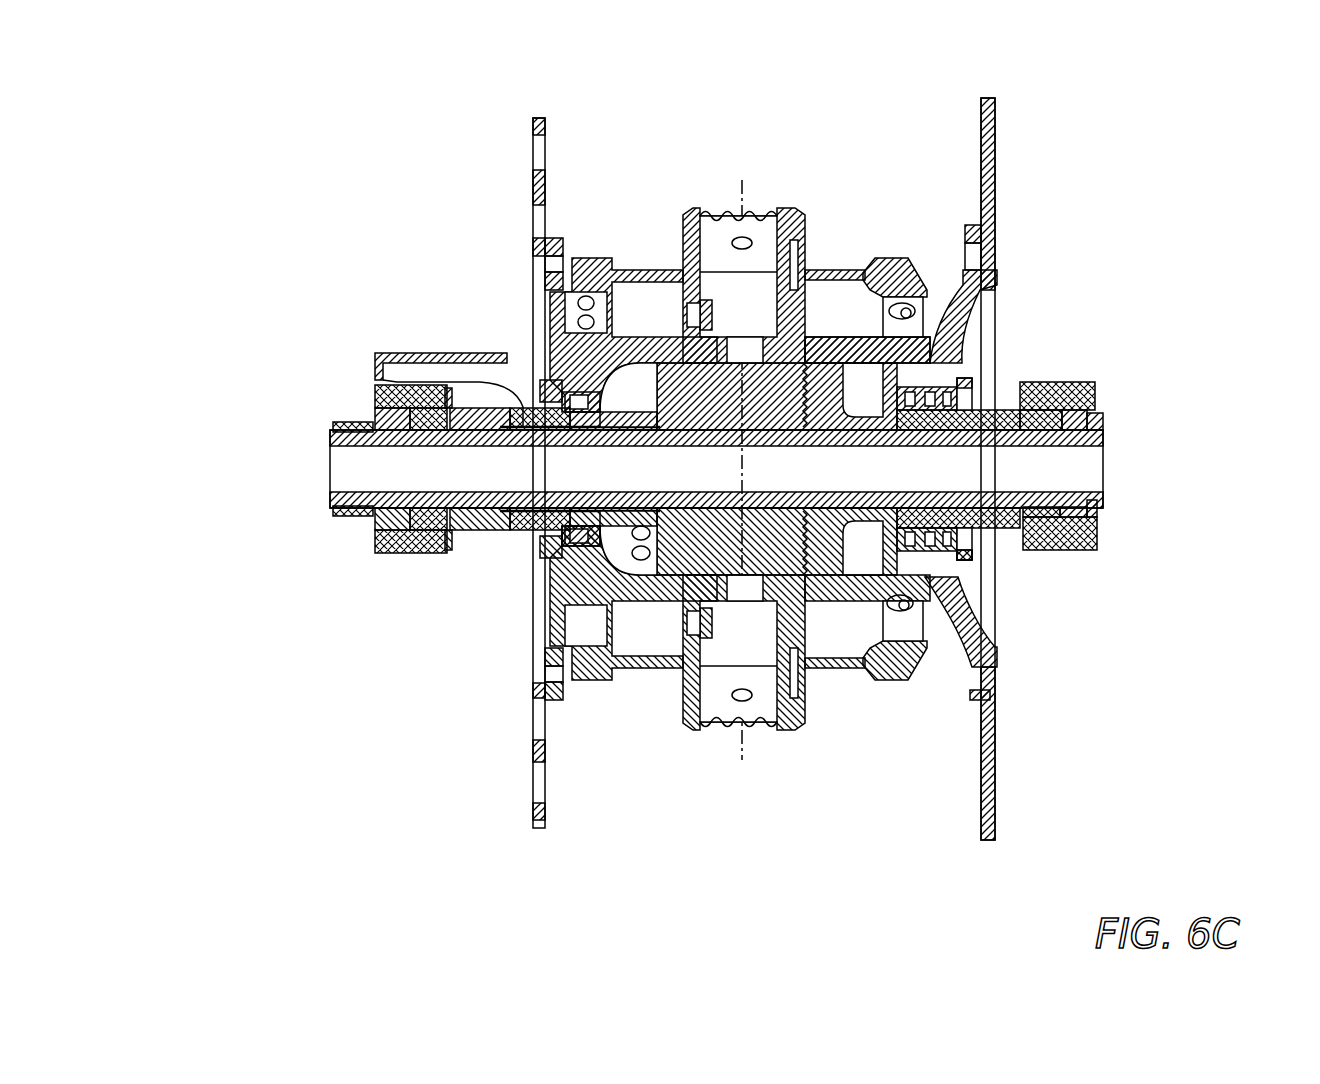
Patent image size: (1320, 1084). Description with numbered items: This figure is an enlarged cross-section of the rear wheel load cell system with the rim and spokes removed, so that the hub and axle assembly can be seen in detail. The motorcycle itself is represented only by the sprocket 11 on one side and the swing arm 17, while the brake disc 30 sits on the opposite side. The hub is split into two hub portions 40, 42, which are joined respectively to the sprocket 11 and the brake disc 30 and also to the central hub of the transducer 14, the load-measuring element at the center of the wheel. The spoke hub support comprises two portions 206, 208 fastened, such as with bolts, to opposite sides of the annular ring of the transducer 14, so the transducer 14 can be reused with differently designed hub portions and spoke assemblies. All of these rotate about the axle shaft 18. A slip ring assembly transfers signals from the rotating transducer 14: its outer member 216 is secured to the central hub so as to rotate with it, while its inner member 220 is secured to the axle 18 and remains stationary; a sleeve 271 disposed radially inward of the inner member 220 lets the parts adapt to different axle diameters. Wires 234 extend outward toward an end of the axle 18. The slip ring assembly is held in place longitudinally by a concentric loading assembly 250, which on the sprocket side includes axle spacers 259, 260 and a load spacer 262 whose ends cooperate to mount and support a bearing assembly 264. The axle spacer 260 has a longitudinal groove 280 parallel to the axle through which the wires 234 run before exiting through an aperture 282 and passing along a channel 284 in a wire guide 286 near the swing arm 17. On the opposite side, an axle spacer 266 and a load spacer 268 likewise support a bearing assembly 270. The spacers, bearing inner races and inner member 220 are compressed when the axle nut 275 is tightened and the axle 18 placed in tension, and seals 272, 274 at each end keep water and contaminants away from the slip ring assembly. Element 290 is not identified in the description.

The sprocket 11 is at (547, 157).
The brake disc 30 is at (996, 132).
The transducer 14 is at (768, 196).
The portion of spoke hub support 206 is at (592, 258).
The portion of spoke hub support 208 is at (900, 257).
The sleeve 271 is at (880, 350).
The hub portion 42 is at (948, 348).
The load spacer 268 is at (927, 387).
The concentric loading assembly 250 is at (1007, 382).
The hub portion 40 is at (623, 410).
The load spacer 262 is at (545, 392).
The wire guide 286 is at (378, 357).
The aperture 282 is at (395, 381).
The channel 284 is at (345, 432).
The axle nut 275 is at (383, 556).
The longitudinal groove 280 is at (430, 556).
The wires 234 is at (477, 537).
The seal 272 is at (530, 560).
The swing arm 17 is at (345, 516).
The axle spacer 259 is at (505, 565).
The axle spacer 260 is at (520, 568).
The bearing assembly 264 is at (560, 612).
The outer member 216 is at (652, 660).
The inner member 220 is at (838, 580).
The bearing assembly 270 is at (993, 770).
The seal 274 is at (1005, 533).
The axle spacer 266 is at (985, 600).
The axle shaft 18 is at (1098, 515).
The hub sleeve 290 is at (662, 455).